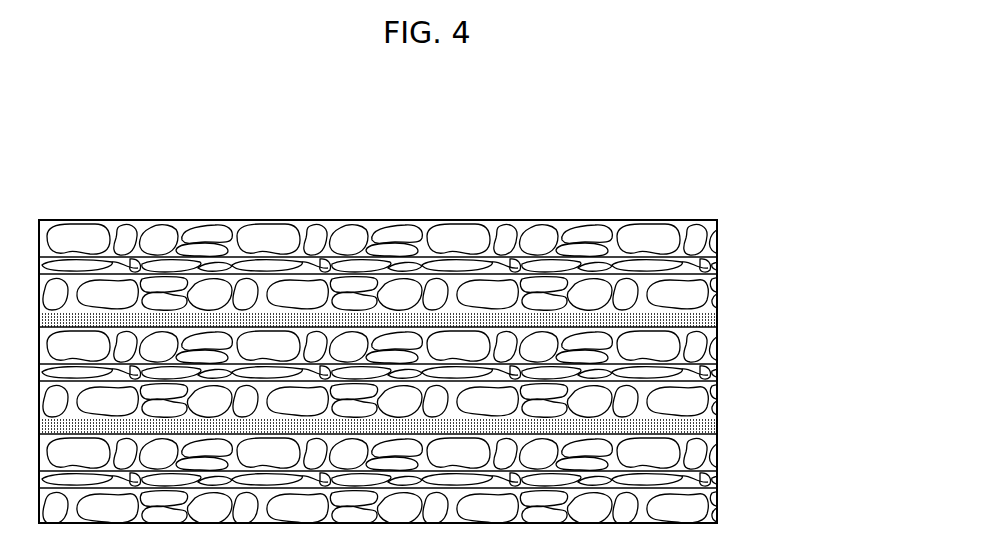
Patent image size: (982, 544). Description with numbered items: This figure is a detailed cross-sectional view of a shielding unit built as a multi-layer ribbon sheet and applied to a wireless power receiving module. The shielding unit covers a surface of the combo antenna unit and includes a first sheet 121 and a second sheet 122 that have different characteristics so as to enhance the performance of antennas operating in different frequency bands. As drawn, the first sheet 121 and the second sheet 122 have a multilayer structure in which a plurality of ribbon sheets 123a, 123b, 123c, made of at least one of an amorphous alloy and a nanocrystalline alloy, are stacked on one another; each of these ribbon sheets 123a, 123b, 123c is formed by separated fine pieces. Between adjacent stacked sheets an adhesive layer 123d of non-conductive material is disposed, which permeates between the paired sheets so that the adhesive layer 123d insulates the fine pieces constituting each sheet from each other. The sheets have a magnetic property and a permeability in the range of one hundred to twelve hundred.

The first sheet 121 is at (430, 155).
The second sheet 122 is at (420, 325).
The ribbon sheet 123a is at (717, 492).
The ribbon sheet 123b is at (717, 383).
The ribbon sheet 123c is at (717, 279).
The adhesive layer 123d is at (717, 316).